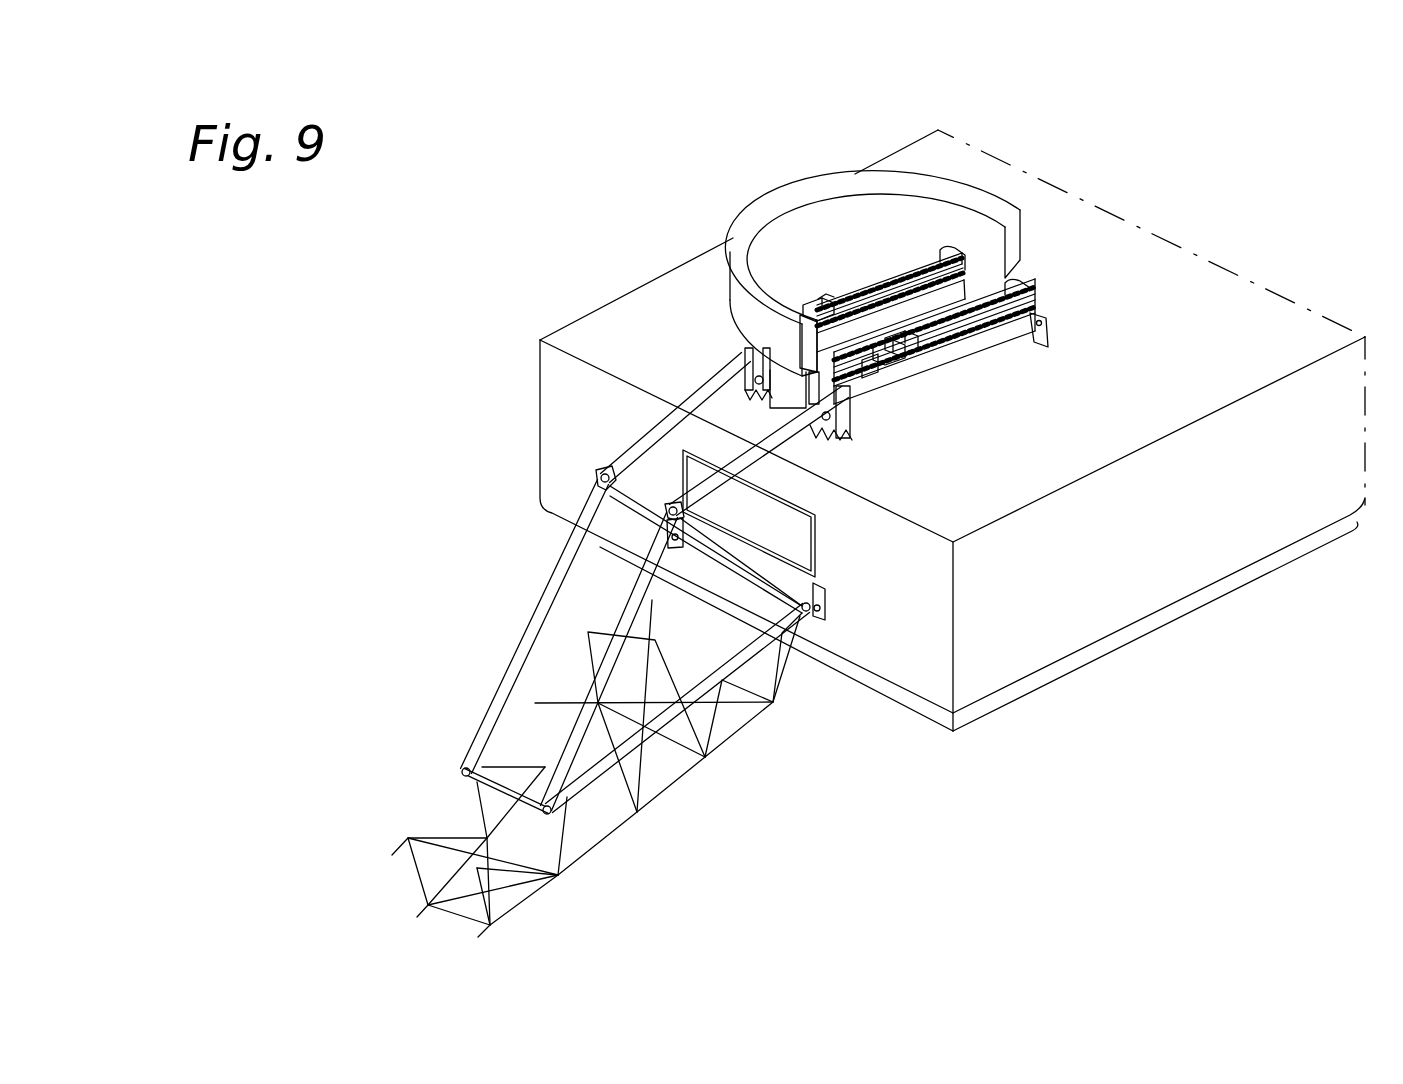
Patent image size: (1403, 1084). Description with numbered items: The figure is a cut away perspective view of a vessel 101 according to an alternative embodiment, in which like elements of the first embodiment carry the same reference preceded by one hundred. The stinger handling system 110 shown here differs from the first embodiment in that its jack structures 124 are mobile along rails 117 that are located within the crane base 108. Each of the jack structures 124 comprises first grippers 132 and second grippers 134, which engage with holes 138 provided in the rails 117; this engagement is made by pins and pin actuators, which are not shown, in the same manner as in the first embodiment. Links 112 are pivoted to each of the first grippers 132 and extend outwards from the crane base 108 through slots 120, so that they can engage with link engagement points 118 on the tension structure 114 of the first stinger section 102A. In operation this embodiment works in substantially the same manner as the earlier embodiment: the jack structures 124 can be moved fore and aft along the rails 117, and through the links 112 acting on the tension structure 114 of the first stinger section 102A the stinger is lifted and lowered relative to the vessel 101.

The vessel 101 is at (583, 264).
The first stinger section 102A is at (632, 815).
The crane base 108 is at (770, 194).
The stinger handling system 110 is at (1007, 290).
The links 112 is at (663, 433).
The tension structure 114 is at (522, 656).
The rails 117 is at (990, 327).
The link engagement points 118 is at (603, 477).
The slots 120 is at (747, 351).
The jack structures 124 is at (915, 360).
The first grippers 132 is at (880, 383).
The second grippers 134 is at (938, 347).
The holes 138 is at (1050, 335).